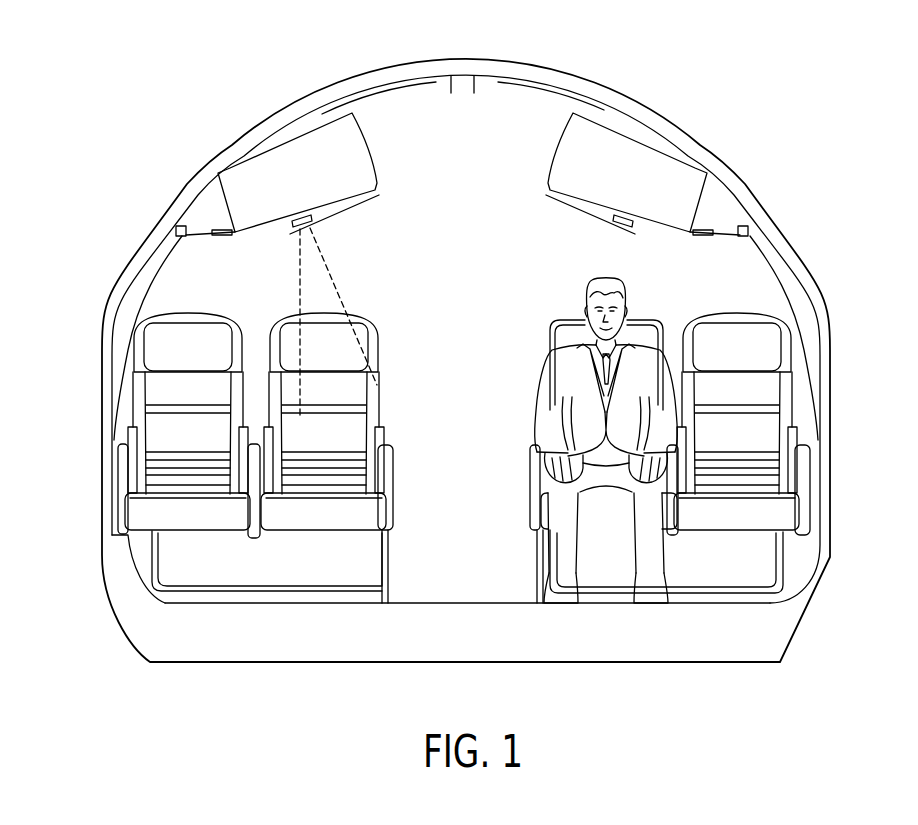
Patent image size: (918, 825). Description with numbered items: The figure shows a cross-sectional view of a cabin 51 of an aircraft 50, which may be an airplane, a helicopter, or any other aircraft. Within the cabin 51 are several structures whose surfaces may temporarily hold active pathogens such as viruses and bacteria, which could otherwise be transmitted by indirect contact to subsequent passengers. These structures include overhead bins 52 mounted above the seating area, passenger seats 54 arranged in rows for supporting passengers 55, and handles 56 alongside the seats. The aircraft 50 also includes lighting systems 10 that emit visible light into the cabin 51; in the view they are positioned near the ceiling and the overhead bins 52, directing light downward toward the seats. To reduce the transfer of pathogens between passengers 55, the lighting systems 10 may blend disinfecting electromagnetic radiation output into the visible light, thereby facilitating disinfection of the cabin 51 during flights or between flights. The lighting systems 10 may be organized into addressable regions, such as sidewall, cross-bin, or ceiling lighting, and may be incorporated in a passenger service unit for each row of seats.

The aircraft 50 is at (122, 83).
The lighting system 10 is at (447, 92).
The overhead bin 52 is at (246, 200).
The passenger 55 is at (700, 290).
The passenger seat 54 is at (347, 393).
The handle 56 is at (393, 457).
The cabin 51 is at (484, 510).